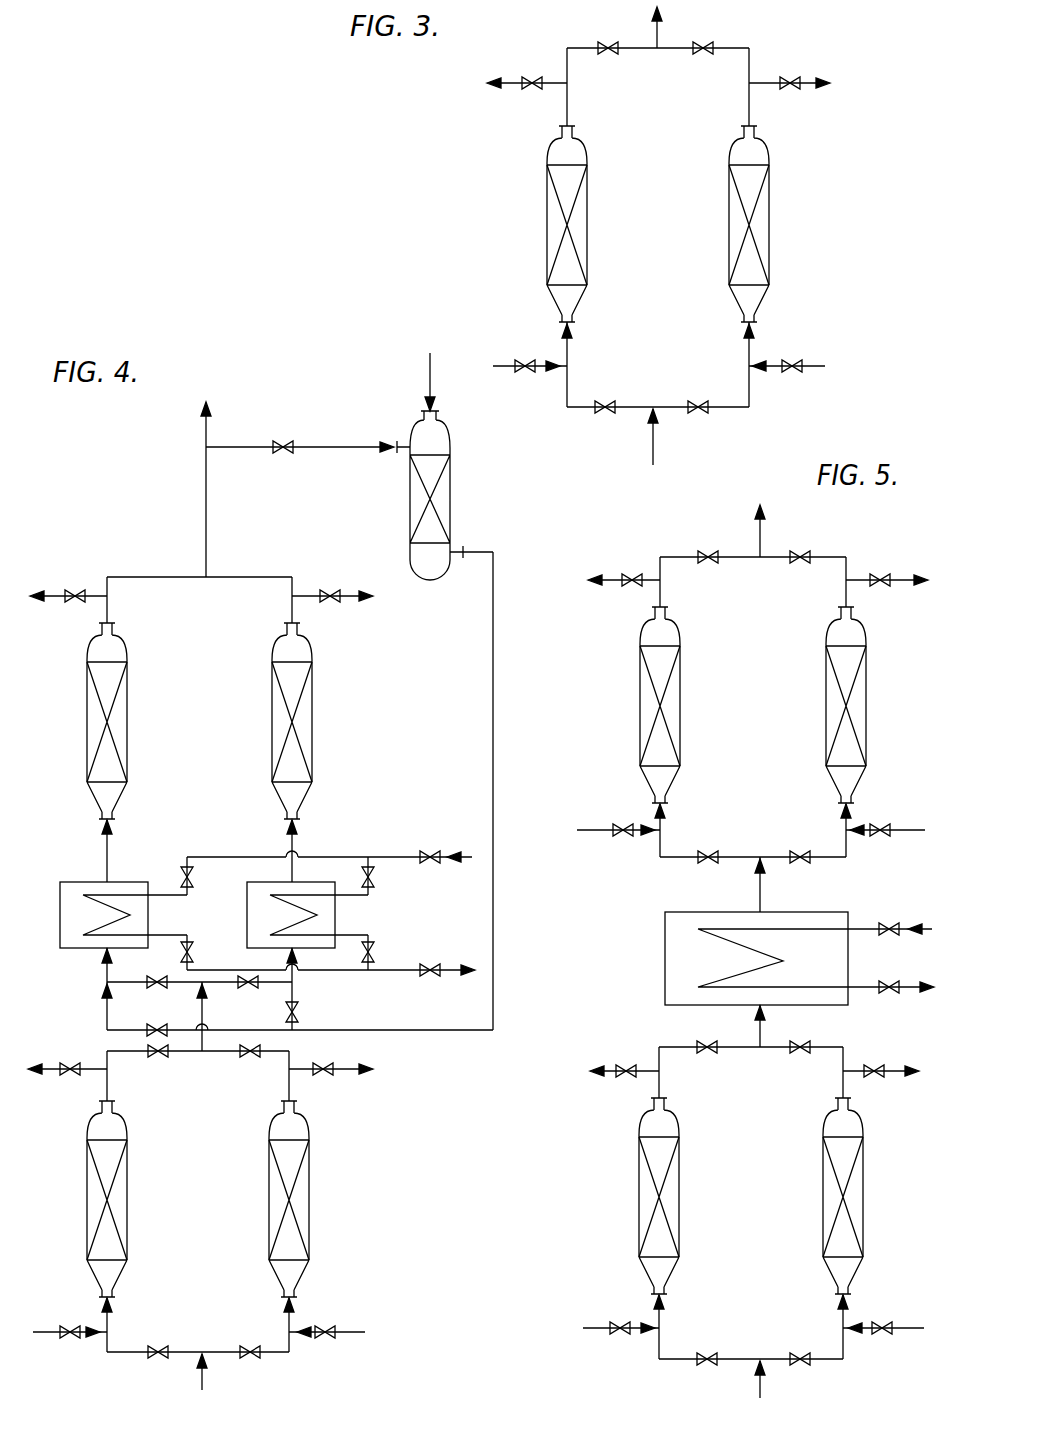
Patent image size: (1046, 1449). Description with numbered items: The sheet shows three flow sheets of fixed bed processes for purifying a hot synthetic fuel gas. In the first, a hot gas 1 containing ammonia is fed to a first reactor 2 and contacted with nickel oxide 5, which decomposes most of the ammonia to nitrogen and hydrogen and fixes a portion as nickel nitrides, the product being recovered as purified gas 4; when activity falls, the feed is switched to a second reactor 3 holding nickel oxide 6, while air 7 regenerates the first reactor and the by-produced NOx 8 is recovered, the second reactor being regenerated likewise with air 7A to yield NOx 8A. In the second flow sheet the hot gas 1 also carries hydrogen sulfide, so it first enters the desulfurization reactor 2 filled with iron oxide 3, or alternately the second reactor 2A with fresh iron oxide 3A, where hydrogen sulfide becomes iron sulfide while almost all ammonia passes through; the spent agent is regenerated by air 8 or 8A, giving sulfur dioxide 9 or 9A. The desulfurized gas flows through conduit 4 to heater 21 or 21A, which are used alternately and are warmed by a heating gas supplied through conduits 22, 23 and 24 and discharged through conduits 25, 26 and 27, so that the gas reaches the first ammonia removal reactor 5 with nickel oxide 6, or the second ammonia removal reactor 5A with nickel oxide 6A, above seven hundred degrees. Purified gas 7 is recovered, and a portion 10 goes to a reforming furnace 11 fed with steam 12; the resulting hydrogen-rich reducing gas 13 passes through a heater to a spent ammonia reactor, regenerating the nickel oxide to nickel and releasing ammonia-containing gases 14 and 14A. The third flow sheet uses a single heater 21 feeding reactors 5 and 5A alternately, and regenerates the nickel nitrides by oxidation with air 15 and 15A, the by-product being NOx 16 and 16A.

In FIG. 3, the hot gas 1 is at (655, 442).
In FIG. 4, the hot gas 1 is at (203, 1380).
In FIG. 5, the hot gas 1 is at (761, 1382).
In FIG. 3, the first reactor 2 is at (547, 232).
In FIG. 4, the first reactor 2 is at (87, 1195).
In FIG. 5, the first reactor 2 is at (639, 1197).
In FIG. 4, the second reactor 2A is at (310, 1198).
In FIG. 5, the second reactor 2A is at (865, 1196).
In FIG. 3, the second reactor 3 is at (770, 232).
In FIG. 4, the second reactor 3 is at (113, 1197).
In FIG. 5, the second reactor 3 is at (670, 1198).
In FIG. 4, the iron oxide 3A is at (269, 1196).
In FIG. 5, the iron oxide 3A is at (824, 1197).
In FIG. 3, the purified gas 4 is at (657, 34).
In FIG. 4, the purified gas 4 is at (203, 1046).
In FIG. 5, the purified gas 4 is at (761, 890).
In FIG. 3, the first ammonia removal reactor 5 is at (582, 233).
In FIG. 4, the first ammonia removal reactor 5 is at (87, 715).
In FIG. 5, the first ammonia removal reactor 5 is at (640, 703).
In FIG. 4, the second ammonia removal reactor 5A is at (312, 715).
In FIG. 5, the second ammonia removal reactor 5A is at (867, 705).
In FIG. 3, the nickel oxide 6 is at (728, 232).
In FIG. 4, the nickel oxide 6 is at (118, 720).
In FIG. 5, the nickel oxide 6 is at (673, 703).
In FIG. 4, the nickel oxide 6A is at (277, 712).
In FIG. 5, the nickel oxide 6A is at (825, 703).
In FIG. 3, the purified gas 7 is at (503, 366).
In FIG. 4, the purified gas 7 is at (205, 537).
In FIG. 5, the purified gas 7 is at (762, 531).
In FIG. 3, the air 7A is at (808, 366).
In FIG. 3, the air 8 is at (514, 82).
In FIG. 4, the air 8 is at (42, 1332).
In FIG. 5, the air 8 is at (598, 1328).
In FIG. 3, the air 8A is at (802, 82).
In FIG. 4, the air 8A is at (342, 1332).
In FIG. 5, the air 8A is at (906, 1328).
In FIG. 4, the sulfur dioxide gas 9 is at (50, 1069).
In FIG. 5, the sulfur dioxide gas 9 is at (611, 1071).
In FIG. 4, the sulfur dioxide gas 9A is at (348, 1069).
In FIG. 5, the sulfur dioxide gas 9A is at (895, 1071).
In FIG. 4, the portion of the purified gas 10 is at (232, 448).
In FIG. 4, the reforming furnace 11 is at (452, 492).
In FIG. 4, the steam 12 is at (428, 377).
In FIG. 4, the reducing gas 13 is at (493, 778).
In FIG. 4, the gas containing by-produced ammonia 14 is at (54, 596).
In FIG. 4, the gas containing by-produced ammonia 14A is at (346, 596).
In FIG. 5, the air 15 is at (603, 830).
In FIG. 5, the air 15A is at (907, 830).
In FIG. 5, the NOx 16 is at (613, 580).
In FIG. 5, the NOx 16A is at (898, 580).
In FIG. 4, the heater 21 is at (60, 895).
In FIG. 5, the heater 21 is at (663, 960).
In FIG. 4, the heater 21A is at (338, 922).
In FIG. 4, the conduit 22 is at (395, 857).
In FIG. 5, the conduit 22 is at (925, 929).
In FIG. 4, the conduit 23 is at (172, 897).
In FIG. 4, the conduit 24 is at (367, 888).
In FIG. 4, the conduit 25 is at (180, 935).
In FIG. 4, the conduit 26 is at (370, 938).
In FIG. 4, the conduit 27 is at (382, 971).
In FIG. 5, the conduit 27 is at (916, 987).